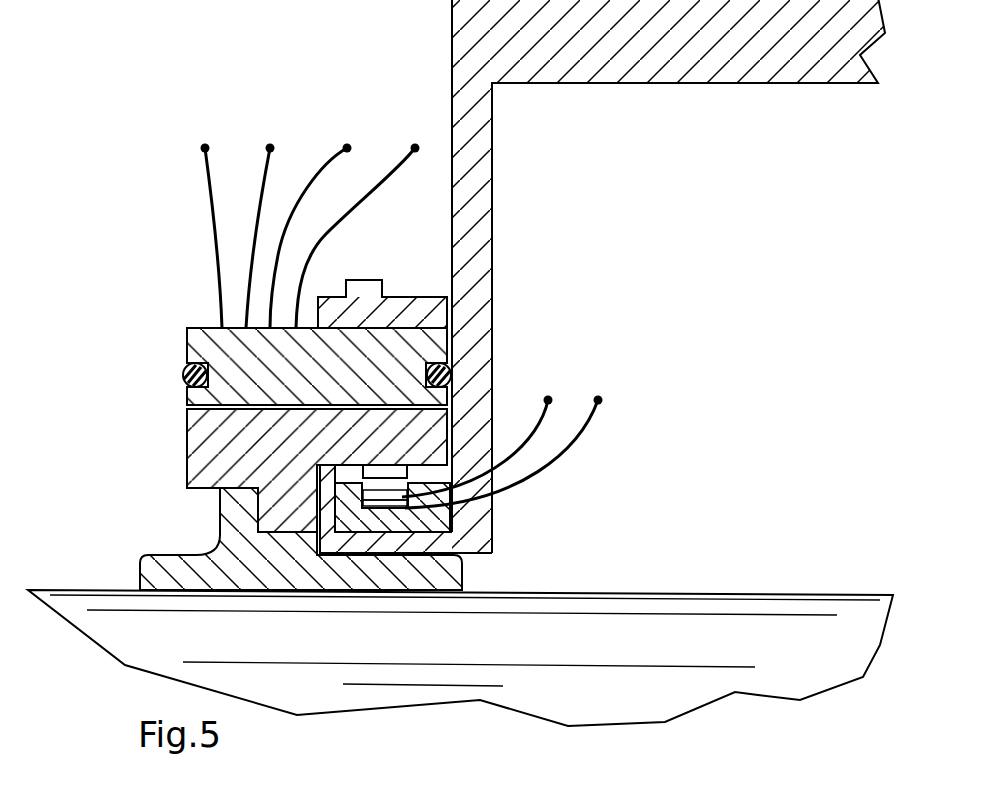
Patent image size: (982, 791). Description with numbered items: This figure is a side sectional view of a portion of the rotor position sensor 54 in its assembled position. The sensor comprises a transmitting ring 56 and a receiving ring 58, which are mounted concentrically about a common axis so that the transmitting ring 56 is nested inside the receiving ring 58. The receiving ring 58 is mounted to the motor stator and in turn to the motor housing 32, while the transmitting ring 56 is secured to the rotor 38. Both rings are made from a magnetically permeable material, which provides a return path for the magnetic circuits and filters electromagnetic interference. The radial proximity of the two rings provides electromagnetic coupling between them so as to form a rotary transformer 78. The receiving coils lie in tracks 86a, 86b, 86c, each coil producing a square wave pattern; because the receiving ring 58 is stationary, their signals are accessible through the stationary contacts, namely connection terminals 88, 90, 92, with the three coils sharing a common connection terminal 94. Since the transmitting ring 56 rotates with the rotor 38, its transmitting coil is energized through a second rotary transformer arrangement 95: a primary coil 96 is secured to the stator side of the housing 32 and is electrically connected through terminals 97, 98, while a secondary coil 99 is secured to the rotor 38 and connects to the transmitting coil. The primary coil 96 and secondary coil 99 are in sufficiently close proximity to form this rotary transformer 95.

The motor housing 32 is at (578, 70).
The rotor 38 is at (667, 633).
The rotor position sensor 54 is at (242, 398).
The transmitting ring 56 is at (193, 432).
The receiving ring 58 is at (208, 327).
The rotary transformer 78 is at (183, 405).
The track 86a is at (255, 177).
The track 86b is at (295, 208).
The track 86c is at (363, 212).
The connection terminal 88 is at (272, 148).
The connection terminal 90 is at (347, 145).
The connection terminal 92 is at (415, 145).
The common connection terminal 94 is at (205, 148).
The rotary transformer arrangement 95 is at (358, 496).
The primary coil 96 is at (395, 510).
The terminal 97 is at (548, 400).
The terminal 98 is at (598, 400).
The secondary coil 99 is at (395, 472).